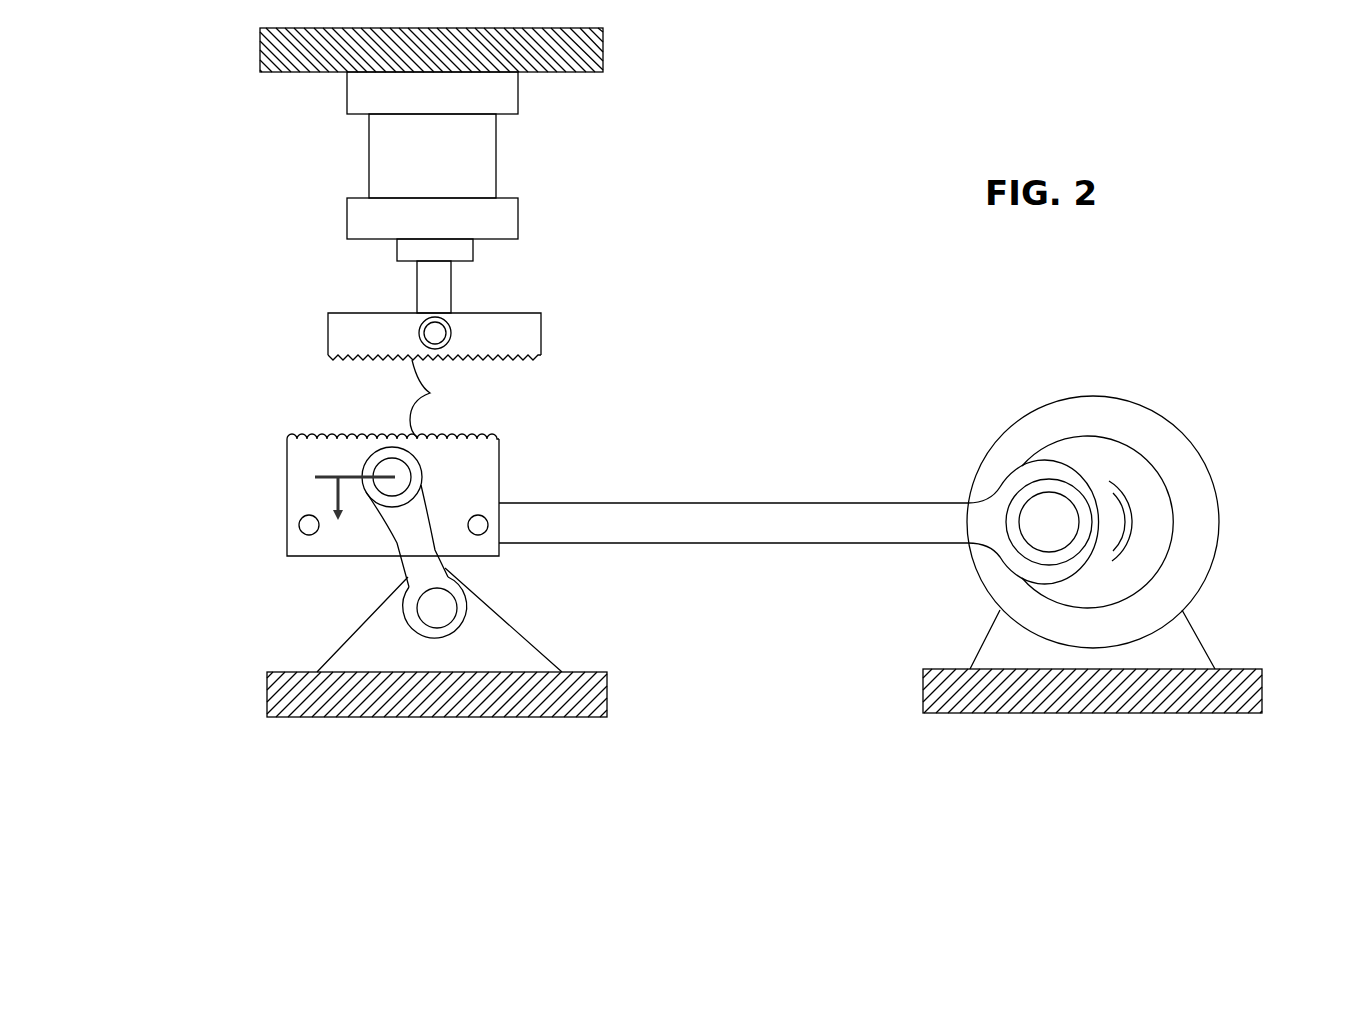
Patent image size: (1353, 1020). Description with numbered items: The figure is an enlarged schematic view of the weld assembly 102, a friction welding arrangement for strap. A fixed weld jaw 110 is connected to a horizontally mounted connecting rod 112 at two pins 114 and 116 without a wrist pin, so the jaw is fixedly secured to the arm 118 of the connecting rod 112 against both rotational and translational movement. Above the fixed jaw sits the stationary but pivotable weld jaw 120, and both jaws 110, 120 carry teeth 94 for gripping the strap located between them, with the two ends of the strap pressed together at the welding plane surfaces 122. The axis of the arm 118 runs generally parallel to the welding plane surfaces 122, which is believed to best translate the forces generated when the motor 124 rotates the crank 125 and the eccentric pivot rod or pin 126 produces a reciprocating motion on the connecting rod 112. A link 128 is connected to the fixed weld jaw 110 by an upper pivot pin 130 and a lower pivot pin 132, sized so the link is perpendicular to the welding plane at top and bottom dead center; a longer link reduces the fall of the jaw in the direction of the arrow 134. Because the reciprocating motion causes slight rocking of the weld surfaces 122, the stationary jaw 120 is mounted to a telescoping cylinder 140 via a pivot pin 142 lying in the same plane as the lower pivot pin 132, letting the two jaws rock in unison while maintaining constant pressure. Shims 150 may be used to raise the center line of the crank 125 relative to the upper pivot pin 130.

The teeth 94 is at (430, 393).
The weld assembly 102 is at (700, 340).
The weld jaw 110 is at (499, 490).
The connecting rod 112 is at (724, 502).
The pin 114 is at (303, 527).
The pin 116 is at (481, 529).
The arm 118 is at (781, 605).
The stationary weld jaw 120 is at (322, 336).
The welding plane surfaces 122 is at (513, 358).
The motor 124 is at (1160, 415).
The crank 125 is at (1127, 523).
The eccentric pivot rod or pin 126 is at (1048, 520).
The link 128 is at (412, 533).
The upper pivot pin 130 is at (400, 482).
The lower pivot pin 132 is at (447, 607).
The arrow 134 is at (327, 500).
The telescoping cylinder 140 is at (418, 290).
The pivot pin 142 is at (437, 332).
The shims 150 is at (1177, 667).